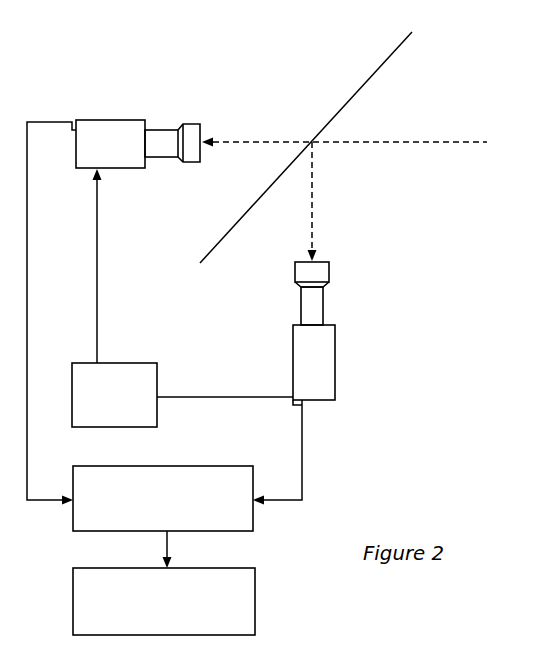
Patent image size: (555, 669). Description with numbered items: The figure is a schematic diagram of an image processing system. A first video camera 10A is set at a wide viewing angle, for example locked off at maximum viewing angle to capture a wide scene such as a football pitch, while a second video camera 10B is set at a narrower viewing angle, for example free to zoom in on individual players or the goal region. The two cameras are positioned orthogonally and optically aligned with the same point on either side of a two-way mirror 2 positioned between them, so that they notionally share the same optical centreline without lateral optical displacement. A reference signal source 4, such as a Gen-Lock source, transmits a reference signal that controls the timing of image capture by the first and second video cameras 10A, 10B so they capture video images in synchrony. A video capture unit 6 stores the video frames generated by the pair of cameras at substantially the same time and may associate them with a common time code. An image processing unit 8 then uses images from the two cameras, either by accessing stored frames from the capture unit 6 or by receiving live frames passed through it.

The two-way mirror 2 is at (318, 147).
The reference signal source 4 is at (114, 395).
The video capture unit 6 is at (163, 498).
The image processing unit 8 is at (164, 601).
The first video camera 10A is at (291, 333).
The second video camera 10B is at (138, 163).